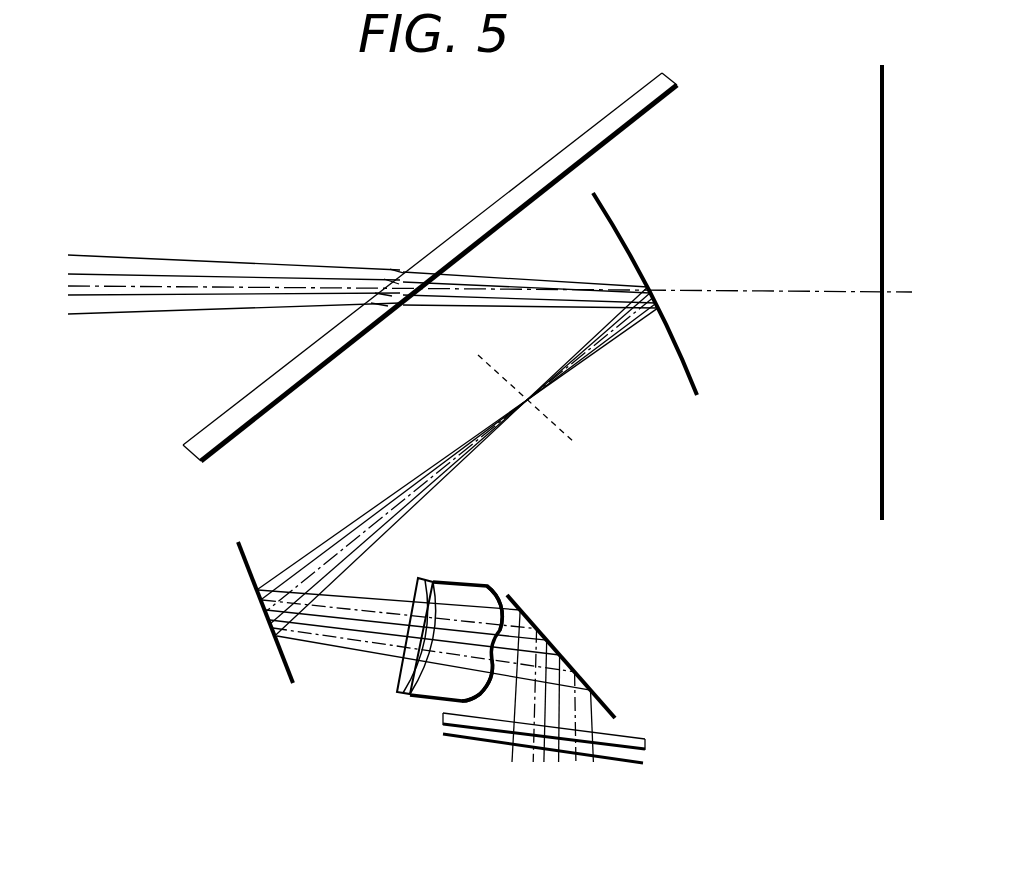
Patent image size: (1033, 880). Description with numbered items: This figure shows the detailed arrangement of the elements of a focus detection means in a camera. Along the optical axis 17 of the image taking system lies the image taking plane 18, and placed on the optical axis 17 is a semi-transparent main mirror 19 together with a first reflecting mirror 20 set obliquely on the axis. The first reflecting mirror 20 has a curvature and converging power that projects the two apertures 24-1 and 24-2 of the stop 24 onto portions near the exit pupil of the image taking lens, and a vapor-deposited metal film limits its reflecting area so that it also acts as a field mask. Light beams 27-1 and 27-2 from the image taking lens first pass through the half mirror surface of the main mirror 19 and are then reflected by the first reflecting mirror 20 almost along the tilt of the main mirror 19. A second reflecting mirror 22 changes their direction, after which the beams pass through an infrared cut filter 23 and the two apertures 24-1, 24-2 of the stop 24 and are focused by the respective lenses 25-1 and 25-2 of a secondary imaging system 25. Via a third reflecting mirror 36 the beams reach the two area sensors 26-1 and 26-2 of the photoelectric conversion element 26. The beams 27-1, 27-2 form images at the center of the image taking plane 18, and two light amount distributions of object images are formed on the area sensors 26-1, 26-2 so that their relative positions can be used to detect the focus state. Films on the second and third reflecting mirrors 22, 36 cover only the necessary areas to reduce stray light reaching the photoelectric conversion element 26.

The optical axis 17 is at (97, 287).
The image taking plane 18 is at (883, 80).
The semi-transparent main mirror 19 is at (670, 80).
The first reflecting mirror 20 is at (627, 240).
The second reflecting mirror 22 is at (238, 549).
The infrared cut filter 23 is at (425, 580).
The stop 24 is at (418, 689).
The aperture 24-1 is at (384, 643).
The aperture 24-2 is at (392, 654).
The secondary imaging system 25 is at (468, 585).
The lens 25-1 is at (492, 590).
The lens 25-2 is at (438, 690).
The photoelectric conversion element 26 is at (571, 774).
The area sensor 26-1 is at (507, 748).
The area sensor 26-2 is at (575, 762).
The light beam 27-1 is at (183, 302).
The light beam 27-2 is at (196, 266).
The third reflecting mirror 36 is at (556, 648).